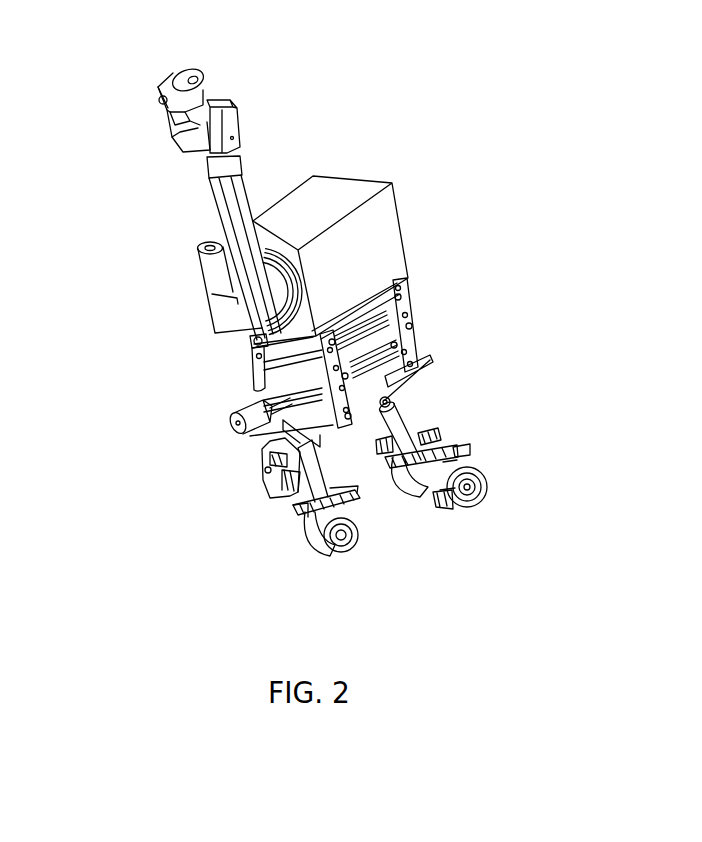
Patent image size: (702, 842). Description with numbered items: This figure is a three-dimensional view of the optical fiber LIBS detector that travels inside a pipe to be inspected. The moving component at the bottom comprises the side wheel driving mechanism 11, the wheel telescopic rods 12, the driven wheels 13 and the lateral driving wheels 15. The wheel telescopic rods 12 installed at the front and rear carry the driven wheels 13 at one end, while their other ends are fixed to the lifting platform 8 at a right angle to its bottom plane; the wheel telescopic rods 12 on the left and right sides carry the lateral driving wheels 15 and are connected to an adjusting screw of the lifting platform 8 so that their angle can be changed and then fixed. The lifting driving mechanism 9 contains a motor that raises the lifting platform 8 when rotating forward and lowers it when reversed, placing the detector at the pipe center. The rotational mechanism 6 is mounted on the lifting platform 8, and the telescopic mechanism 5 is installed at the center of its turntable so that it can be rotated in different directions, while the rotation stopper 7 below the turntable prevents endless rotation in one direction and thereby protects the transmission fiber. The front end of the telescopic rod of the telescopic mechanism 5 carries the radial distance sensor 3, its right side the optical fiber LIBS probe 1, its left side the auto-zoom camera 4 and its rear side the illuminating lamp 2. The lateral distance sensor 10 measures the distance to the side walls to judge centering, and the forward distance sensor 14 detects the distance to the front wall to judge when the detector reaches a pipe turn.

The optical fiber LIBS probe 1 is at (178, 90).
The illuminating lamp 2 is at (218, 113).
The radial distance sensor 3 is at (208, 123).
The camera 4 is at (237, 118).
The telescopic mechanism 5 is at (242, 183).
The rotational mechanism 6 is at (273, 298).
The rotation stopper 7 is at (262, 338).
The lifting platform 8 is at (256, 343).
The lifting driving mechanism 9 is at (240, 425).
The lateral distance sensor 10 is at (387, 400).
The side wheel driving mechanism 11 is at (292, 486).
The wheel telescopic rods 12 is at (303, 510).
The driven wheels 13 is at (341, 548).
The forward distance sensor 14 is at (305, 435).
The lateral driving wheels 15 is at (457, 500).